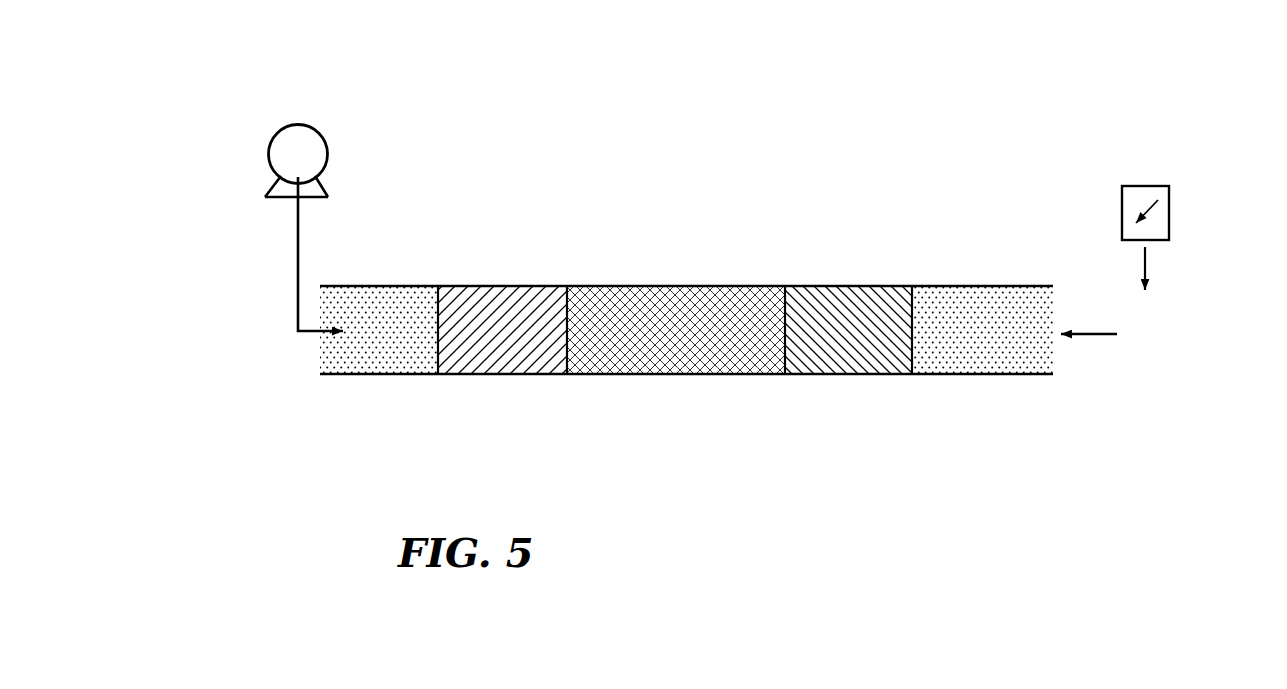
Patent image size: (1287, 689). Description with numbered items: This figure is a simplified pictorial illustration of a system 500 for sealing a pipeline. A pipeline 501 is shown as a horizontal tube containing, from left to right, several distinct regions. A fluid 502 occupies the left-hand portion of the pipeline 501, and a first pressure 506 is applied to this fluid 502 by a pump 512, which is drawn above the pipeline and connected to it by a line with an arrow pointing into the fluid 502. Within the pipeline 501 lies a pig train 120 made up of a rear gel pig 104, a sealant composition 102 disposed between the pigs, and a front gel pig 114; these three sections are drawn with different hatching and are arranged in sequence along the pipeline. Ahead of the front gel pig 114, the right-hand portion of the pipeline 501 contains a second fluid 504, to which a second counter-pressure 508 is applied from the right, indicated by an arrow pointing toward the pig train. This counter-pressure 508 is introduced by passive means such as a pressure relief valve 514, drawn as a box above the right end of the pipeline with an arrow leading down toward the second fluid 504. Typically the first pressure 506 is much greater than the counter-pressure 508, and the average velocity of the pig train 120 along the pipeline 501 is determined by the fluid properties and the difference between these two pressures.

The system 500 is at (1124, 58).
The pump 512 is at (328, 150).
The first pressure P1 506 is at (297, 239).
The pig train 120 is at (777, 190).
The pipeline 501 is at (975, 377).
The fluid 502 is at (396, 307).
The rear gel pig 104 is at (502, 307).
The sealant composition 102 is at (707, 307).
The front gel pig 114 is at (840, 352).
The second fluid 504 is at (994, 300).
The pressure relief valve 514 is at (1169, 215).
The second counter-pressure P2 508 is at (1143, 352).